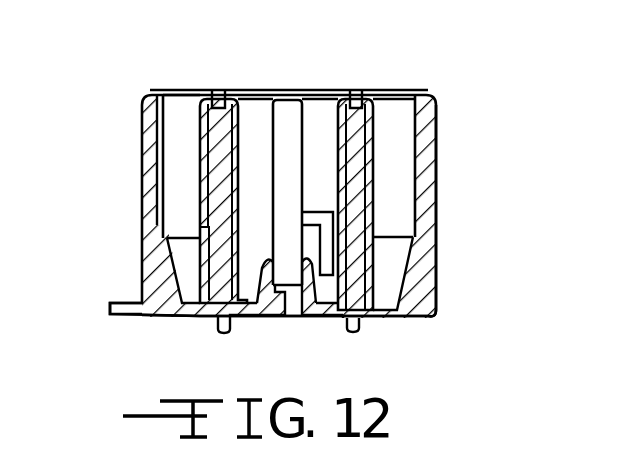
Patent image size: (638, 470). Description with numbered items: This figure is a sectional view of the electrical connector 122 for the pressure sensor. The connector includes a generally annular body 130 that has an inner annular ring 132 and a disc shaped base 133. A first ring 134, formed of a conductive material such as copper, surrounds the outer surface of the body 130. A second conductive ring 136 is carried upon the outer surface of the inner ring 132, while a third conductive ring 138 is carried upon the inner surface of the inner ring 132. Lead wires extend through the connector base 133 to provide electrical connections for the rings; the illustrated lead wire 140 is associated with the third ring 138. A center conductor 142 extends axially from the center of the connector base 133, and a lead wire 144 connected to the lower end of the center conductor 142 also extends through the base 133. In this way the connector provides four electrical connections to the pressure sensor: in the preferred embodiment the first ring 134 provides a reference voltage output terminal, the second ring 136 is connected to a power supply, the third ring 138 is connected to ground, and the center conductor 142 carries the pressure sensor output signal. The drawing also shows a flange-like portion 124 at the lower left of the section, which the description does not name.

The electrical connector 122 is at (441, 82).
The mounting flange 124 is at (120, 312).
The body 130 is at (415, 258).
The inner annular ring 132 is at (358, 100).
The base 133 is at (418, 314).
The first ring 134 is at (423, 187).
The second conductive ring 136 is at (200, 113).
The third conductive ring 138 is at (262, 98).
The lead wire 140 is at (317, 322).
The center conductor 142 is at (292, 124).
The lead wire 144 is at (250, 322).